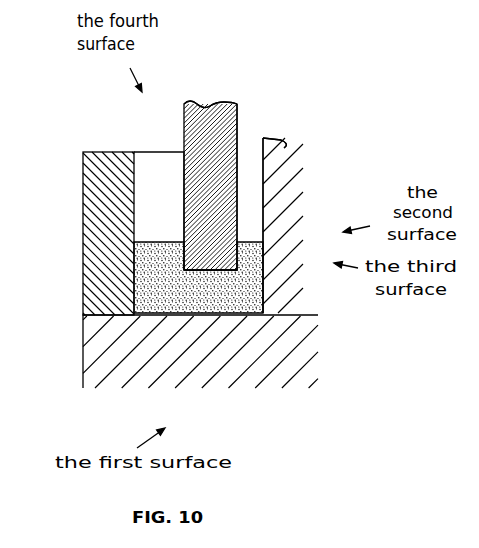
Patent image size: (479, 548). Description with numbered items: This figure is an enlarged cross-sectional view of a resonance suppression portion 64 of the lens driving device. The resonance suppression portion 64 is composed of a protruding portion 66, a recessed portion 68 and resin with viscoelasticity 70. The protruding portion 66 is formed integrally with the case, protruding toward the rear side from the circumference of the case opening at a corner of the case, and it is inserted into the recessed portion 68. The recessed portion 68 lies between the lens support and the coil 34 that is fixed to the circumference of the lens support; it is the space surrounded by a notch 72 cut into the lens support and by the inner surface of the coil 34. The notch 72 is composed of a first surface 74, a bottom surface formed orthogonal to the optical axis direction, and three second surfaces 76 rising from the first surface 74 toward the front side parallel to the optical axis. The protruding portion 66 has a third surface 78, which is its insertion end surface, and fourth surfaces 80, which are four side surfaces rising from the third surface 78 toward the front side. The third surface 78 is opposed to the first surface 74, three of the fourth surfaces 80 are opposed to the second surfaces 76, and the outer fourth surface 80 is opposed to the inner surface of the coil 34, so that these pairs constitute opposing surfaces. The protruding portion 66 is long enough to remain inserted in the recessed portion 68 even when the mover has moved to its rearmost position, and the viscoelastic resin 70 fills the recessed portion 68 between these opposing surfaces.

The coil 34 is at (91, 222).
The resonance suppression portion 64 is at (238, 115).
The protruding portion 66 is at (220, 101).
The recessed portion 68 is at (250, 202).
The resin with viscoelasticity 70 is at (218, 302).
The notch 72 is at (258, 158).
The first surface 74 is at (158, 310).
The second surface 76 is at (264, 222).
The third surface 78 is at (224, 269).
The fourth surface 80 is at (184, 178).